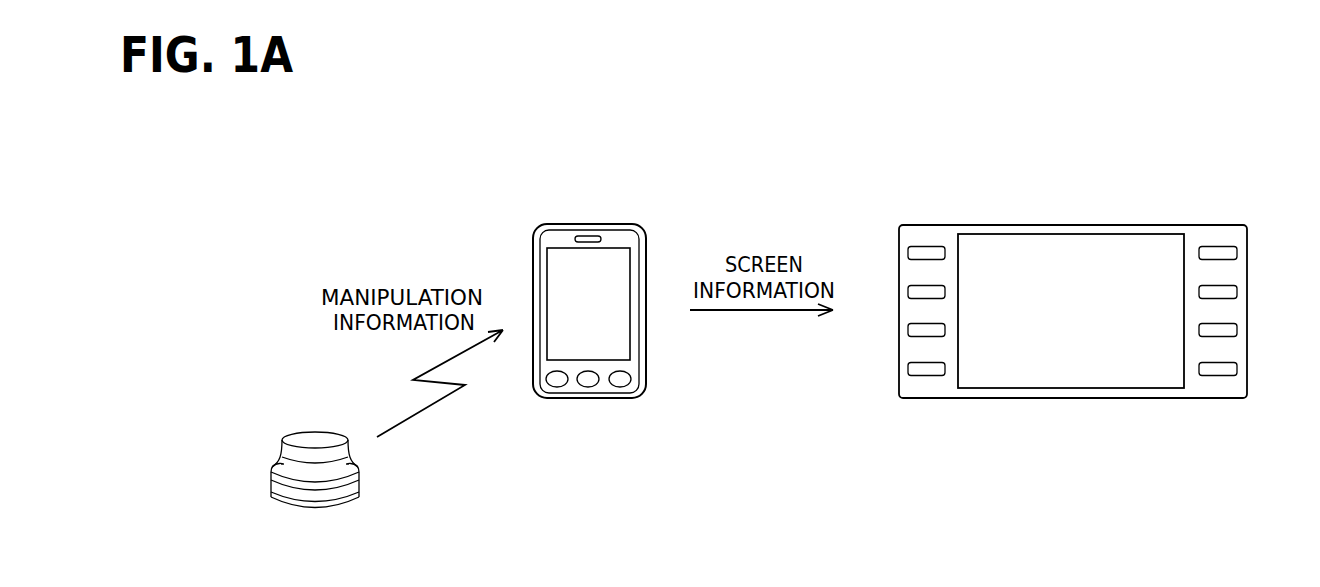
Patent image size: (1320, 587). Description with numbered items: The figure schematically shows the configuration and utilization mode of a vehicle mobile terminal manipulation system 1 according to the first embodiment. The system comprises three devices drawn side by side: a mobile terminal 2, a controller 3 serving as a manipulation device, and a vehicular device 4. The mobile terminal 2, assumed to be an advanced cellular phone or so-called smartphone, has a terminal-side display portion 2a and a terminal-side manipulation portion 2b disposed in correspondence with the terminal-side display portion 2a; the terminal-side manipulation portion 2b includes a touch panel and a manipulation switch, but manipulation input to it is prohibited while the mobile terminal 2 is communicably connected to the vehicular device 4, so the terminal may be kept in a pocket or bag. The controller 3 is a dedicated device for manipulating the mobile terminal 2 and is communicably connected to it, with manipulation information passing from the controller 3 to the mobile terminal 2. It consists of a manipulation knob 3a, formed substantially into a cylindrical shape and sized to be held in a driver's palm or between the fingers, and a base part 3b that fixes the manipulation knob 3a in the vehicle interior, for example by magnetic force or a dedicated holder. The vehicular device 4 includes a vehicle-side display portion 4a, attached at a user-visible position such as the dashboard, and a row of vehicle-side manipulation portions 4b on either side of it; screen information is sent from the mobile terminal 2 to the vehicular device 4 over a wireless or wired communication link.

The mobile terminal manipulation system 1 is at (683, 218).
The mobile terminal 2 is at (592, 224).
The terminal-side display portion 2a is at (613, 280).
The terminal-side manipulation portion 2b is at (557, 388).
The controller 3 is at (287, 446).
The manipulation knob 3a is at (290, 454).
The base part 3b is at (283, 497).
The vehicular device 4 is at (1075, 225).
The vehicle-side display portion 4a is at (1073, 370).
The vehicle-side manipulation portions 4b is at (908, 253).